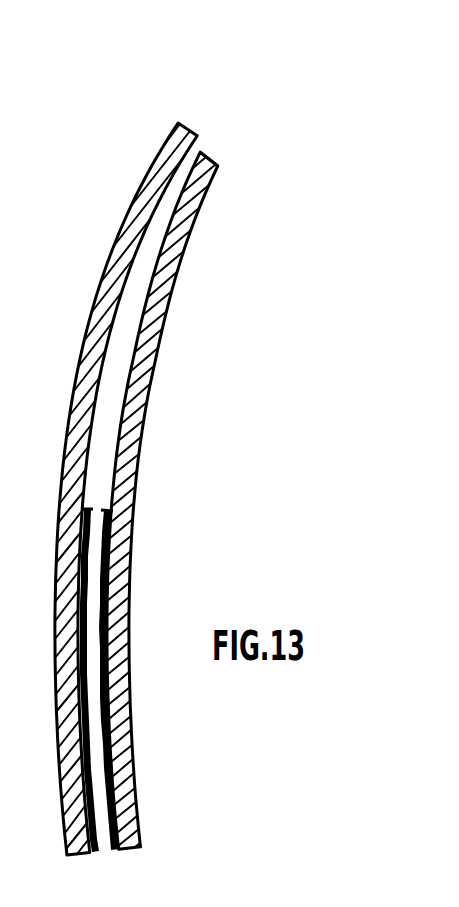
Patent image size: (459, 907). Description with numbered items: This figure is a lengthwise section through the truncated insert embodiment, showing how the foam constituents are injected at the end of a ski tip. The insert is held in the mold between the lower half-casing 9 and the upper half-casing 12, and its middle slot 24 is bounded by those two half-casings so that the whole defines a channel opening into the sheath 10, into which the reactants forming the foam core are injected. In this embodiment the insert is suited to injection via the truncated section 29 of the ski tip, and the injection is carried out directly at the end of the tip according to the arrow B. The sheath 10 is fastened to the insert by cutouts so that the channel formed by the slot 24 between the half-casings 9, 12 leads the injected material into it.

The lower half-casing 9 is at (75, 718).
The sheath 10 is at (110, 720).
The upper half-casing 12 is at (118, 563).
The middle slot 24 is at (113, 370).
The truncated section 29 is at (222, 161).
The arrow B is at (207, 138).